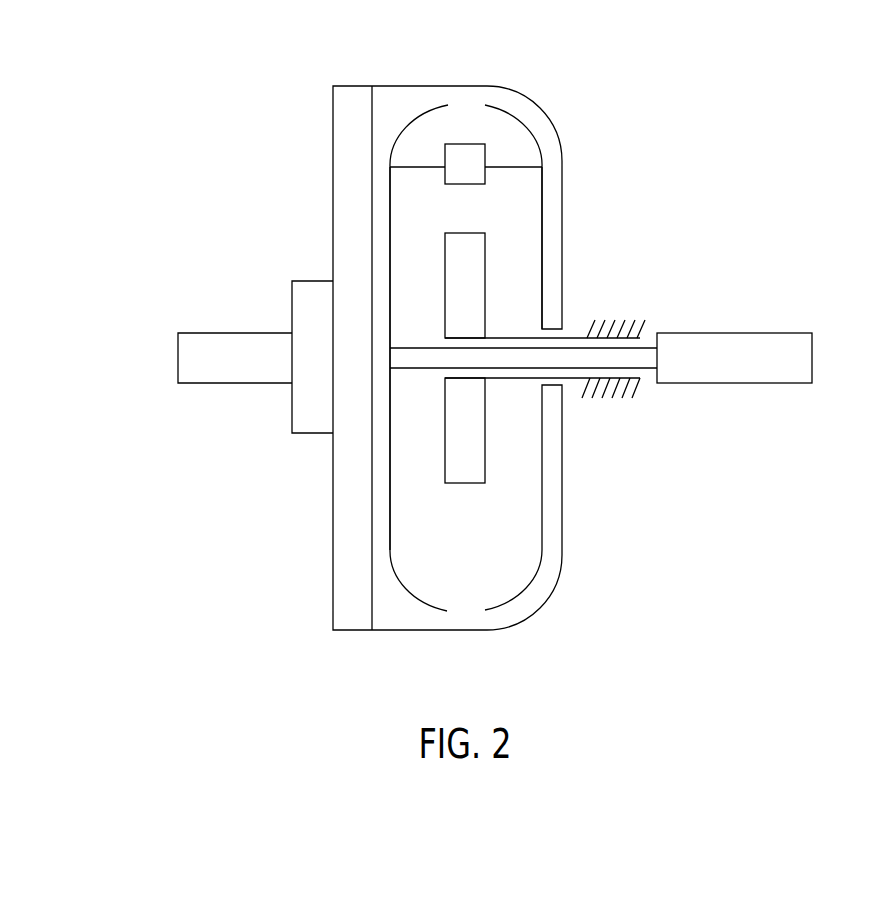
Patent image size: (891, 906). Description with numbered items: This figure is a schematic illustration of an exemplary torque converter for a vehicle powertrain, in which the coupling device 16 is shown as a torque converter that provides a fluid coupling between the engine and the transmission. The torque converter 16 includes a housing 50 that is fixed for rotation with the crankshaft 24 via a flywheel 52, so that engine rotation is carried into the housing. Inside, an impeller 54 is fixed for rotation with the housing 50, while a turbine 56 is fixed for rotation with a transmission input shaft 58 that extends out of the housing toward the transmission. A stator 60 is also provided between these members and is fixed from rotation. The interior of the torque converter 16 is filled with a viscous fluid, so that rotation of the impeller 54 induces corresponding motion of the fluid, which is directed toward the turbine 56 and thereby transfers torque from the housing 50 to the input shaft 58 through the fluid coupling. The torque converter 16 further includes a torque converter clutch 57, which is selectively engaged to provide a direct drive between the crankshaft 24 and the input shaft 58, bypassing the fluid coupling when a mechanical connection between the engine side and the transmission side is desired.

The torque converter 16 is at (712, 475).
The crankshaft 24 is at (178, 357).
The housing 50 is at (468, 86).
The flywheel 52 is at (332, 97).
The impeller 54 is at (542, 240).
The turbine 56 is at (390, 547).
The torque converter clutch 57 is at (485, 155).
The transmission input shaft 58 is at (697, 333).
The stator 60 is at (483, 472).